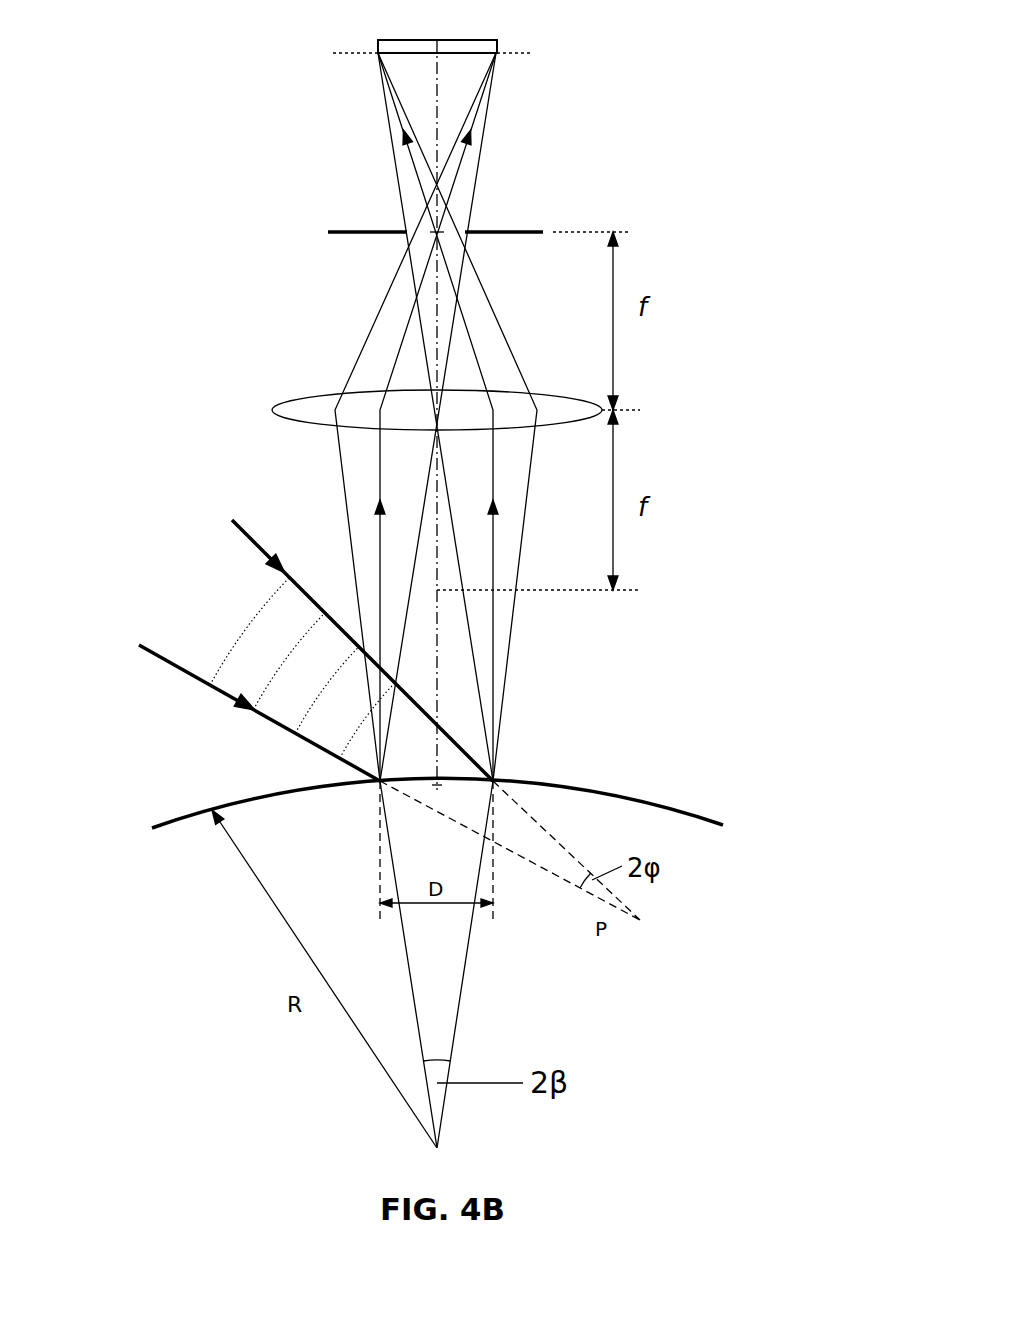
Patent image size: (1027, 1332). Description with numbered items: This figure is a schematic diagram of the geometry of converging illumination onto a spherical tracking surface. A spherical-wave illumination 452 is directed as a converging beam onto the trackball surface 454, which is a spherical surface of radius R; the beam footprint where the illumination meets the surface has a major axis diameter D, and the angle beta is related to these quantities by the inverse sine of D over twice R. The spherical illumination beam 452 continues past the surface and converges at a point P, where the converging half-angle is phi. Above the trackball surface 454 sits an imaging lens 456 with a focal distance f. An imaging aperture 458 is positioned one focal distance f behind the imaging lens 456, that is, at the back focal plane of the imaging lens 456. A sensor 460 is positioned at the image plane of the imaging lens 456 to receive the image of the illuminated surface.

The spherical-wave illumination 452 is at (261, 646).
The trackball surface 454 is at (481, 776).
The imaging lens 456 is at (485, 410).
The imaging aperture 458 is at (454, 238).
The sensor 460 is at (555, 38).